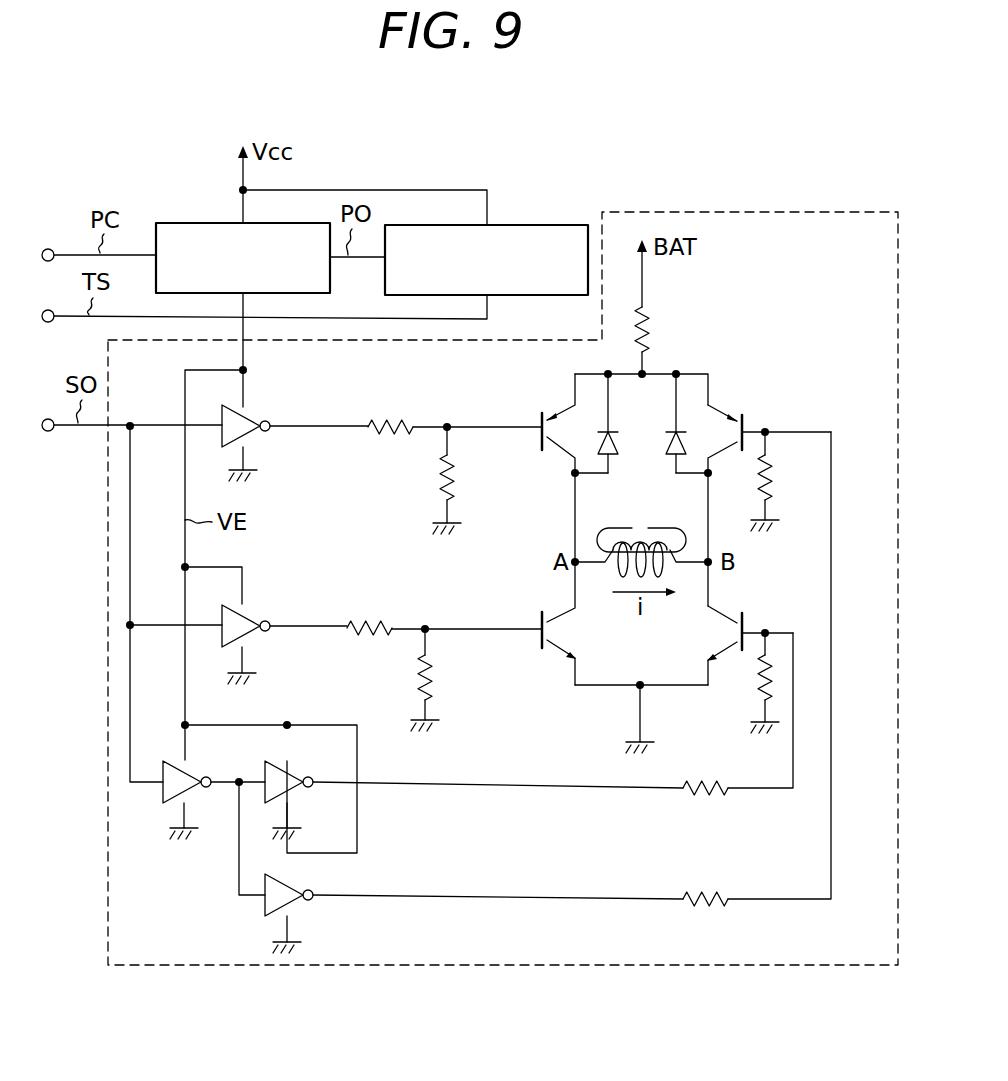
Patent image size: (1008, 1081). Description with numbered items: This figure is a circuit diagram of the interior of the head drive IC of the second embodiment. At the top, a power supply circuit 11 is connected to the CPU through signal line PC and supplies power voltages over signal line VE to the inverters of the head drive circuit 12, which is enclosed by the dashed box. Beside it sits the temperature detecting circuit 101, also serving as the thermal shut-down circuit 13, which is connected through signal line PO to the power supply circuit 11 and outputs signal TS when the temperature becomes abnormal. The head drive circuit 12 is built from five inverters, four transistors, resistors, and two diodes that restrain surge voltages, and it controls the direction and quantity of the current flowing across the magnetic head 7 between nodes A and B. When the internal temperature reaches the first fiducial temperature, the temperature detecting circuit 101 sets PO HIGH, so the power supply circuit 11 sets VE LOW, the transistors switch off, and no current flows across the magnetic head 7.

The magnetic head 7 is at (654, 535).
The power supply circuit 11 is at (186, 222).
The head drive circuit 12 is at (848, 968).
The thermal shut-down circuit 13 is at (500, 225).
The temperature detecting circuit 101 is at (545, 224).